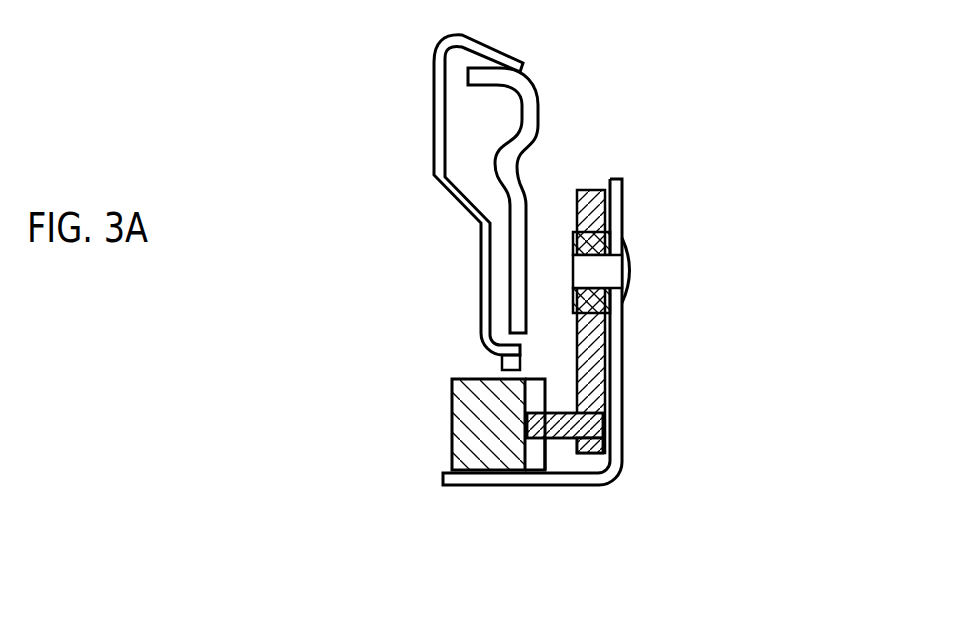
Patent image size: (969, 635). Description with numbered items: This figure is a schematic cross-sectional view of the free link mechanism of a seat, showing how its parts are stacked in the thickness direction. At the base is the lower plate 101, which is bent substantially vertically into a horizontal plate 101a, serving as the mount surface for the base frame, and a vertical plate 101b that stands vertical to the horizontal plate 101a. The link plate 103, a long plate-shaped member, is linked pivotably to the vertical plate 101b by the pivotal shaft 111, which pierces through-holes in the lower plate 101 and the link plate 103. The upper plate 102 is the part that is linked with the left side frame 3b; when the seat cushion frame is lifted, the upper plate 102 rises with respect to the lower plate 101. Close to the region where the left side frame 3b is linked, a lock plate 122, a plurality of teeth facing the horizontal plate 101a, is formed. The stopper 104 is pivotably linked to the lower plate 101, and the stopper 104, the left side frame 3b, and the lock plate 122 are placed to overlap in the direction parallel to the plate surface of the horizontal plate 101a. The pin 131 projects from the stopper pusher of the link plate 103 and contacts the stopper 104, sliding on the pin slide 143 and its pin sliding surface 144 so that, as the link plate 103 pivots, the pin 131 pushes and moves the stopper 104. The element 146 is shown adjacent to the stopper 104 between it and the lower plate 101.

The left side frame 3b is at (480, 268).
The lower plate 101 is at (612, 387).
The horizontal plate 101a is at (543, 485).
The vertical plate 101b is at (612, 363).
The upper plate 102 is at (506, 180).
The link plate 103 is at (592, 188).
The stopper 104 is at (452, 443).
The pivotal shaft 111 is at (598, 272).
The lock plate 122 is at (500, 358).
The pin 131 is at (593, 418).
The pin slide 143 is at (597, 478).
The pin sliding surface 144 is at (547, 455).
The spacer 146 is at (540, 472).